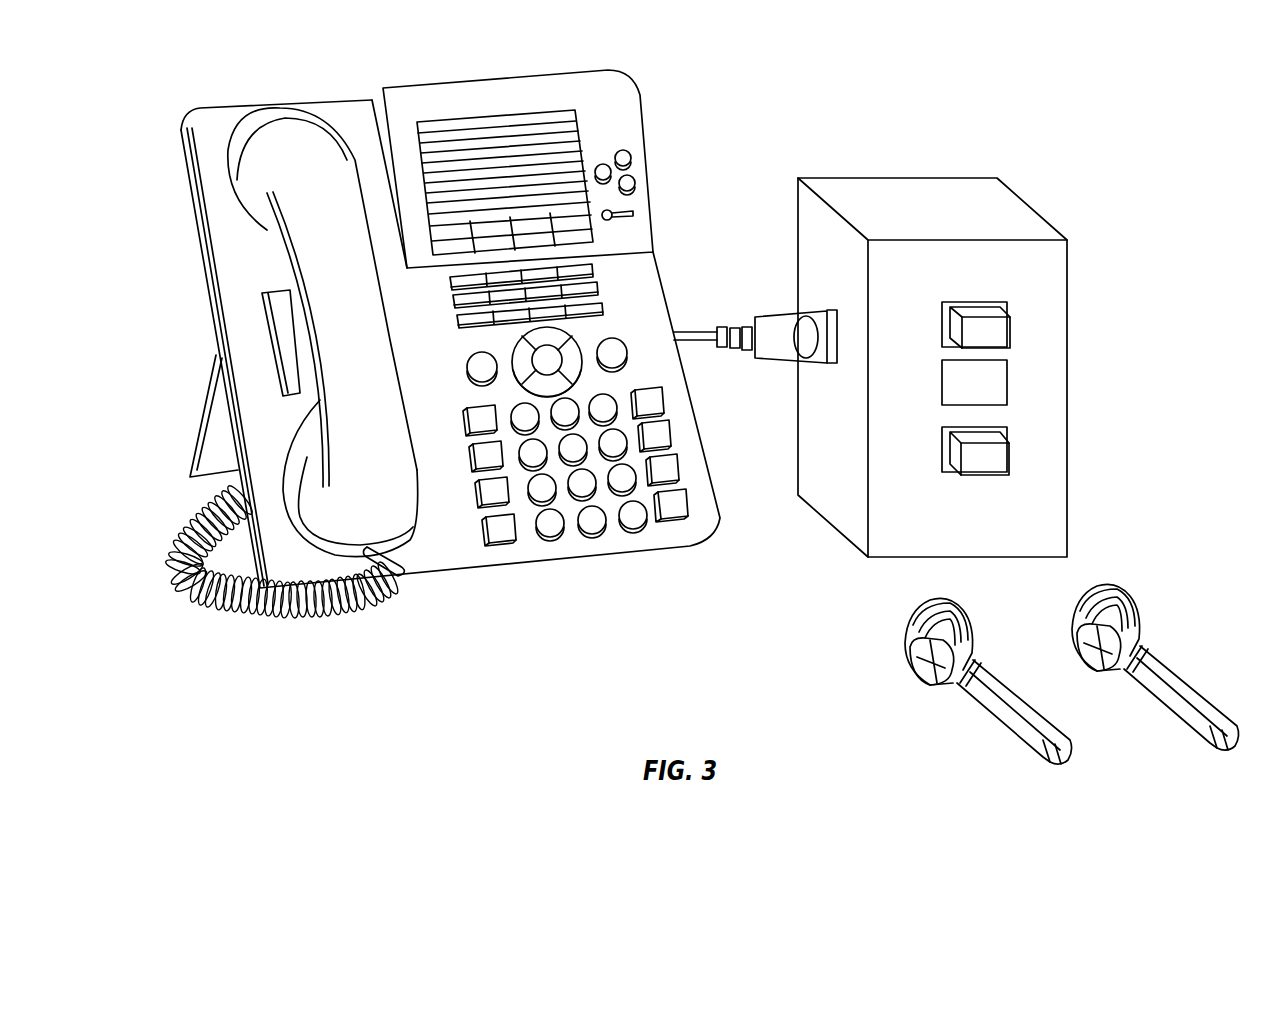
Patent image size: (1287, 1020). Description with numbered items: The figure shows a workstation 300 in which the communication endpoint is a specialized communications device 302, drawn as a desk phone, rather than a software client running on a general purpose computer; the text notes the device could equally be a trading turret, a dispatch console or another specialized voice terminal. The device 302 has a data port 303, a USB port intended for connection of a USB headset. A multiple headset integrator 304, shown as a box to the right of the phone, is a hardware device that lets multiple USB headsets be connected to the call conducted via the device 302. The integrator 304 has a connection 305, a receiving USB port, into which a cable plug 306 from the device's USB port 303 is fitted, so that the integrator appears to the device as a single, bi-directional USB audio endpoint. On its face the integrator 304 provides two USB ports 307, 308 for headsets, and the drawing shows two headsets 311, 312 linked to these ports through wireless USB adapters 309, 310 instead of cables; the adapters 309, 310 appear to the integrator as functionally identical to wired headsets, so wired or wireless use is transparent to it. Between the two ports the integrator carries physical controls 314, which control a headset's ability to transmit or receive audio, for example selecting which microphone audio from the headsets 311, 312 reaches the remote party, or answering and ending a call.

The workstation 300 is at (1039, 129).
The specialized communications device 302 is at (647, 151).
The data port 303 is at (674, 333).
The multiple headset integrator 304 is at (1032, 207).
The connection 305 is at (832, 308).
The cable plug 306 is at (762, 360).
The USB port 307 is at (996, 302).
The USB port 308 is at (997, 427).
The wireless USB adapter 309 is at (1011, 333).
The wireless USB adapter 310 is at (1011, 458).
The headset 311 is at (912, 666).
The headset 312 is at (1120, 586).
The physical controls 314 is at (993, 395).